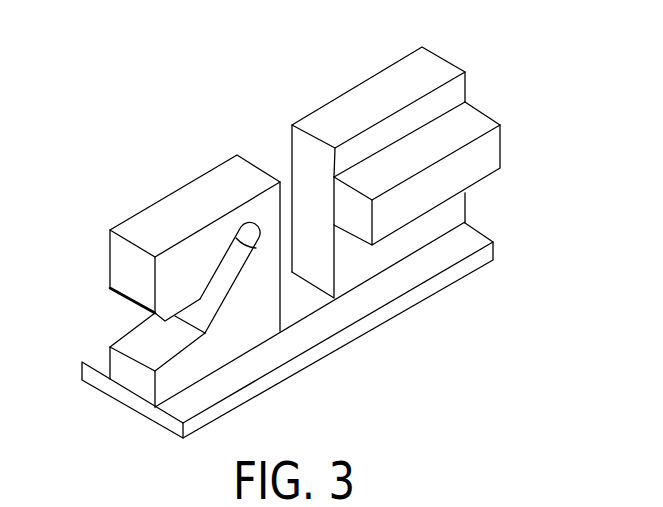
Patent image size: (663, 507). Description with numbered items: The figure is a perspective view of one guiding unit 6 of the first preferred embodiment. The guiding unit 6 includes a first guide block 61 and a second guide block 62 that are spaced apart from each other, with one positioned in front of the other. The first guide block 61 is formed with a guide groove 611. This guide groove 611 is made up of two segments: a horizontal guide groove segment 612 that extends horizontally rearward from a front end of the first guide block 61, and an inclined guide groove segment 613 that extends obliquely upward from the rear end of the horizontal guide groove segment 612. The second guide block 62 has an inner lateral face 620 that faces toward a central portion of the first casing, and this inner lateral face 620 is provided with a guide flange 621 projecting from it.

The guiding unit 6 is at (234, 109).
The first guide block 61 is at (188, 203).
The guide groove 611 is at (218, 291).
The horizontal guide groove segment 612 is at (148, 333).
The inclined guide groove segment 613 is at (233, 268).
The second guide block 62 is at (378, 90).
The inner lateral face 620 is at (457, 212).
The guide flange 621 is at (478, 120).